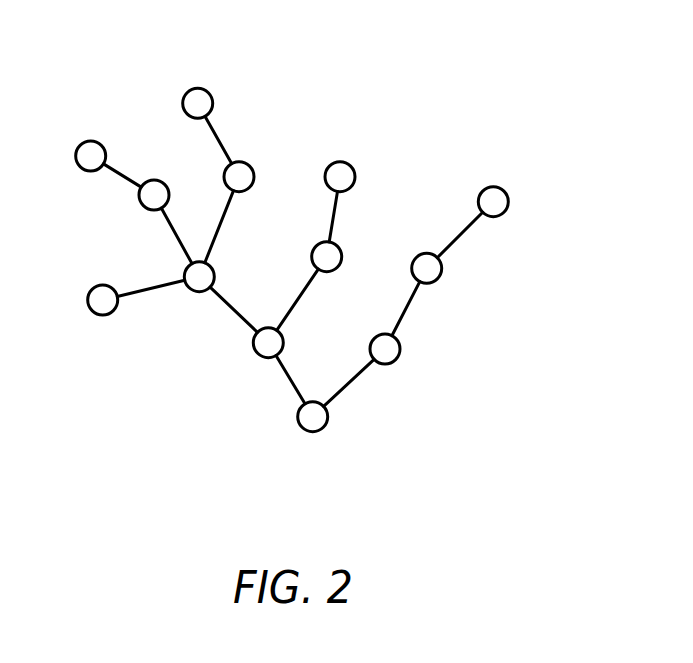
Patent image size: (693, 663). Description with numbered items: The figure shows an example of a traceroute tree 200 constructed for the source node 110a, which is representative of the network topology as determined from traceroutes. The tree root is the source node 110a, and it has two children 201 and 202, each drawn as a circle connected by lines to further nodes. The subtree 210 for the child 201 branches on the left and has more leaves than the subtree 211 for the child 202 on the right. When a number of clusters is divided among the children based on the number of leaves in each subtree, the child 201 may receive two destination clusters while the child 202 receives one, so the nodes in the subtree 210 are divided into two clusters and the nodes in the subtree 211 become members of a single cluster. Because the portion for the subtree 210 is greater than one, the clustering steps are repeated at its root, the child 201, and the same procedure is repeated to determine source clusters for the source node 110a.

The traceroute tree 200 is at (316, 20).
The subtree 210 is at (168, 349).
The subtree 211 is at (493, 338).
The child 201 is at (256, 350).
The child 202 is at (400, 357).
The source node 110a is at (300, 429).